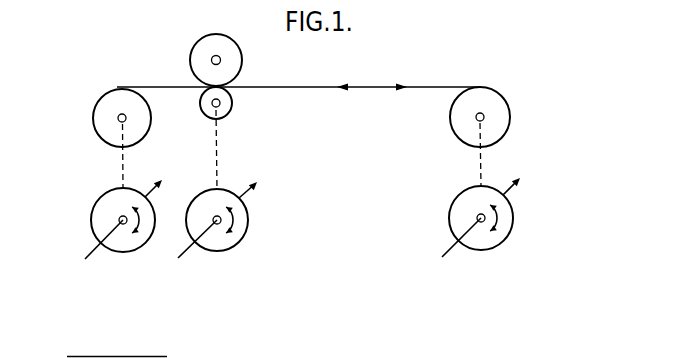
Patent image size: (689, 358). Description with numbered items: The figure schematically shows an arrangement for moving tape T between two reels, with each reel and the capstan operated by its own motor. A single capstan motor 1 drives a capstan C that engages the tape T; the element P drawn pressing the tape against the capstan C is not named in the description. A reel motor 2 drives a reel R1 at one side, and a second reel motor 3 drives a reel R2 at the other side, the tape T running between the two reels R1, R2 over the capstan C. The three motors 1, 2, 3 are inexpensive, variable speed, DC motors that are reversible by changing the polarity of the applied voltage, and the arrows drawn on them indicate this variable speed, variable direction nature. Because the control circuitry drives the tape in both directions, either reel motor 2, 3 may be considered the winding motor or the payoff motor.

The tape T is at (292, 86).
The pinch roller P is at (192, 52).
The capstan C is at (232, 109).
The reel R1 is at (509, 110).
The reel R2 is at (93, 112).
The capstan motor 1 is at (249, 213).
The reel motor 2 is at (450, 213).
The second reel motor 3 is at (91, 213).